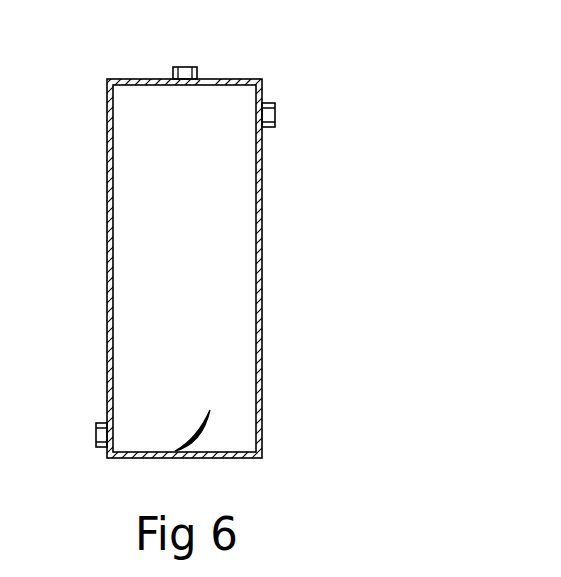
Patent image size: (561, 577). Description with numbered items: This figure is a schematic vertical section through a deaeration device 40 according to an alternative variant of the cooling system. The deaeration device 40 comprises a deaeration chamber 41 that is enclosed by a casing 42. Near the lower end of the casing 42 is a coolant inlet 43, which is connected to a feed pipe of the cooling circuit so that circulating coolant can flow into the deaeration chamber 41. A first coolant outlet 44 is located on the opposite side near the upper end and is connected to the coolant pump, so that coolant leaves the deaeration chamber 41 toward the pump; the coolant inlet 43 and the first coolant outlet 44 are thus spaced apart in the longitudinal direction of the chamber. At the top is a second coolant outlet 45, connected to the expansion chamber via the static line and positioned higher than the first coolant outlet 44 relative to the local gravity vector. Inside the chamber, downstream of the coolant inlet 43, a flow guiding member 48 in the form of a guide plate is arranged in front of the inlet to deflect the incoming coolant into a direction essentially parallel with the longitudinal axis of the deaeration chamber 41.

The deaeration device 40 is at (279, 307).
The deaeration chamber 41 is at (236, 203).
The casing 42 is at (262, 157).
The coolant inlet 43 is at (100, 432).
The first coolant outlet 44 is at (272, 115).
The second coolant outlet 45 is at (187, 75).
The flow guiding member 48 is at (197, 432).